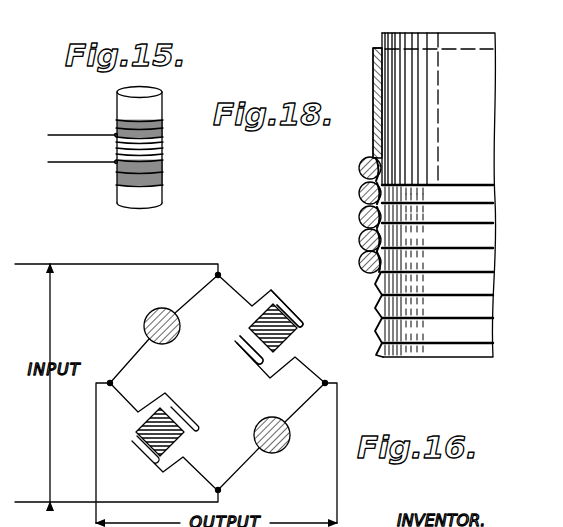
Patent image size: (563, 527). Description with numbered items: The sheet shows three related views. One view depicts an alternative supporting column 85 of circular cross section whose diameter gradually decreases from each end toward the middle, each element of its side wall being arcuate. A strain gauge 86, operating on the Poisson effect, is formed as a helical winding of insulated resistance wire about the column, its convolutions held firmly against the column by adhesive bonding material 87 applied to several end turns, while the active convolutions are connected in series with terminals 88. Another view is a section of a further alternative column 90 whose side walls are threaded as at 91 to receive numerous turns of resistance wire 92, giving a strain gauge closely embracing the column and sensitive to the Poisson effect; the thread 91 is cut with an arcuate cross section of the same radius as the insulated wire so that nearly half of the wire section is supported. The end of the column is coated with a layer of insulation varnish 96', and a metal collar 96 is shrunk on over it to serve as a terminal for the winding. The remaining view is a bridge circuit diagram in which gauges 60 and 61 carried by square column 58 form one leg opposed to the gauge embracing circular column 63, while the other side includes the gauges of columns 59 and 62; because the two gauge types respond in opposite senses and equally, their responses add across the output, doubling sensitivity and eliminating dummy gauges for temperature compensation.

In FIG. 15, the column 85 is at (117, 103).
In FIG. 15, the strain gauge 86 is at (117, 150).
In FIG. 15, the adhesive bonding material 87 is at (117, 121).
In FIG. 15, the terminals 88 is at (48, 162).
In FIG. 18, the column 90 is at (486, 40).
In FIG. 18, the thread 91 is at (378, 310).
In FIG. 18, the resistance wire 92 is at (359, 243).
In FIG. 18, the metal collar member 96 is at (356, 103).
In FIG. 18, the insulation varnish layer 96' is at (362, 41).
In FIG. 16, the column 58 is at (253, 322).
In FIG. 16, the column 59 is at (185, 443).
In FIG. 16, the strain gauge 60 is at (287, 306).
In FIG. 16, the strain gauge 61 is at (250, 349).
In FIG. 16, the column 62 is at (277, 452).
In FIG. 16, the column 63 is at (150, 313).